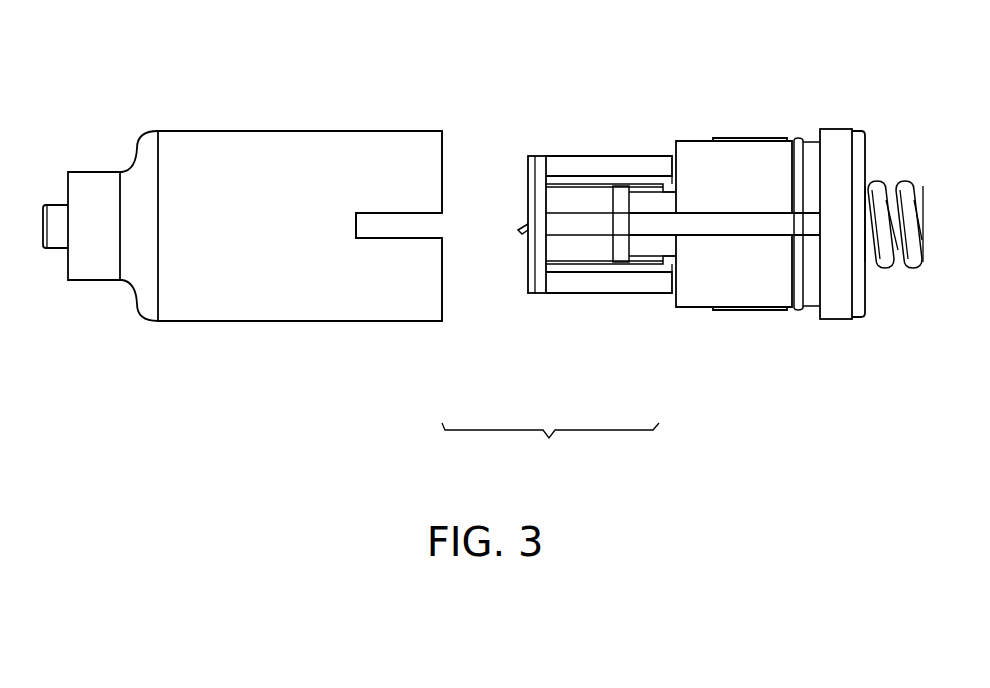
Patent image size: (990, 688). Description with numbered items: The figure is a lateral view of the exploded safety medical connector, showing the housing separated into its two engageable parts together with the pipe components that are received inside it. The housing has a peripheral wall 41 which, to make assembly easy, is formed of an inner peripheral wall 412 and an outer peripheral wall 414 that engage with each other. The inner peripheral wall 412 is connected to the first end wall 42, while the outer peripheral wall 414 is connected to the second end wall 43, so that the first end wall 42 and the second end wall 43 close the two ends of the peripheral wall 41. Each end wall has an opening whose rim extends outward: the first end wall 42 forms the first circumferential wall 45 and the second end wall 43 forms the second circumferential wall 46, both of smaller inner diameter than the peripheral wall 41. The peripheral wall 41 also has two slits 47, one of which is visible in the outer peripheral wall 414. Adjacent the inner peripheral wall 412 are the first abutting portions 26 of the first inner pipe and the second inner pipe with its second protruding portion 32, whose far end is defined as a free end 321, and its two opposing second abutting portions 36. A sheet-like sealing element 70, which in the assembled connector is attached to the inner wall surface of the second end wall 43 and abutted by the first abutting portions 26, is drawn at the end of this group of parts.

The first abutting portions 26 is at (613, 160).
The second protruding portion 32 is at (583, 225).
The free end 321 is at (518, 222).
The second abutting portions 36 is at (652, 202).
The peripheral wall 41 is at (550, 448).
The inner peripheral wall 412 is at (702, 287).
The outer peripheral wall 414 is at (413, 293).
The first end wall 42 is at (858, 298).
The second end wall 43 is at (150, 288).
The first circumferential wall 45 is at (902, 180).
The second circumferential wall 46 is at (58, 238).
The slits 47 is at (398, 227).
The sealing element 70 is at (537, 163).